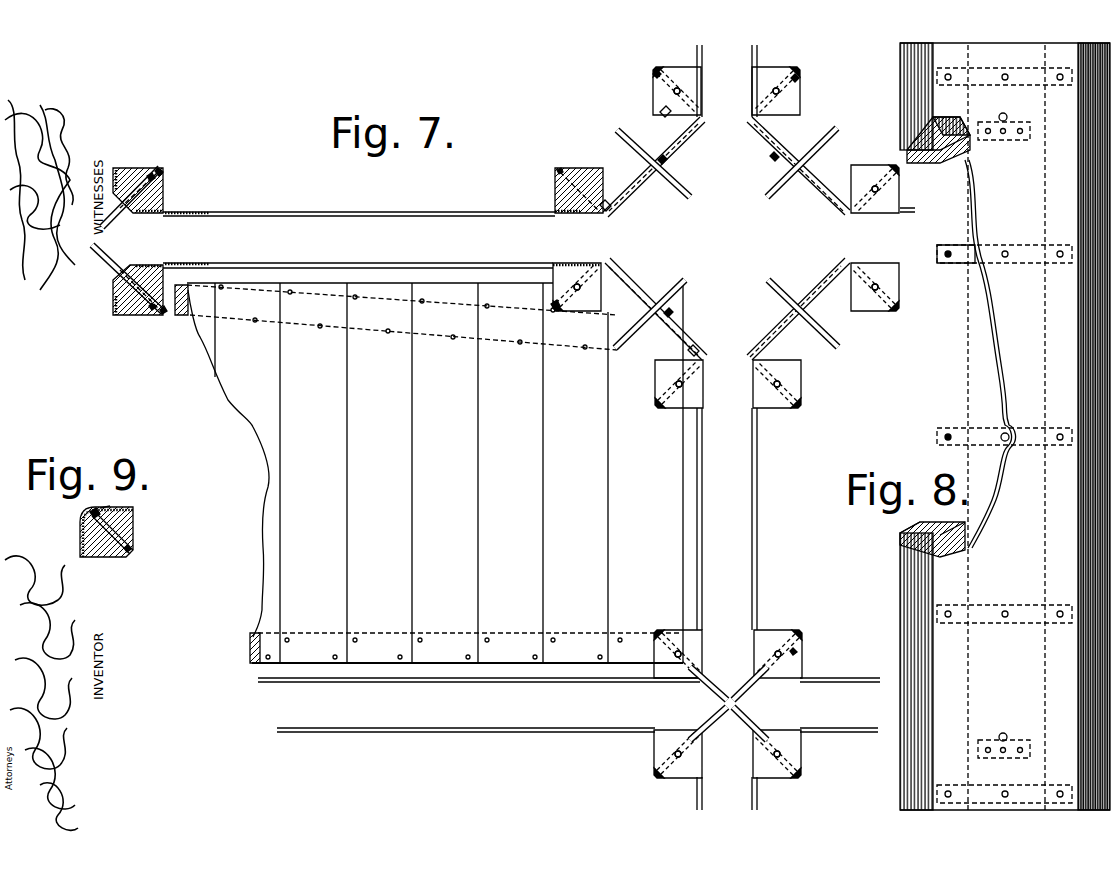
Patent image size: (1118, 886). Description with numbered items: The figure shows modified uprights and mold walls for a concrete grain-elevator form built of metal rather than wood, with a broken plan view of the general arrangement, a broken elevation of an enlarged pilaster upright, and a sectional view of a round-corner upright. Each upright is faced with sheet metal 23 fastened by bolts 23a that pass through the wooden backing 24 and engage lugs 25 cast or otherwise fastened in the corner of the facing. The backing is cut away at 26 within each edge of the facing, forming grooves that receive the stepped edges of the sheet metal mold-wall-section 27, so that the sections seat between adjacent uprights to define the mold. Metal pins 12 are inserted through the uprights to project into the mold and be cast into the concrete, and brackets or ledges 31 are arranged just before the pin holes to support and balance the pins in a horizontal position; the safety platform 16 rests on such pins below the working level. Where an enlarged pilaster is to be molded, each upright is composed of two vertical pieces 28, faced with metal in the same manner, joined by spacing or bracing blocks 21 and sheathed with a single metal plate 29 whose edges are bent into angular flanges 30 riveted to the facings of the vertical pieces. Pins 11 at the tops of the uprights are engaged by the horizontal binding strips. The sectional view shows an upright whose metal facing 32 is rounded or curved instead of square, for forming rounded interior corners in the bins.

In FIG. 7, the pin 11 is at (678, 88).
In FIG. 7, the metal pin 12 is at (110, 258).
In FIG. 8, the metal pin 12 is at (1006, 114).
In FIG. 7, the safety platform 16 is at (429, 473).
In FIG. 7, the spacing or bracing block 21 is at (632, 176).
In FIG. 8, the spacing or bracing block 21 is at (958, 262).
In FIG. 7, the sheet metal facing 23 is at (114, 170).
In FIG. 8, the sheet metal facing 23 is at (900, 94).
In FIG. 7, the bolt 23a is at (164, 184).
In FIG. 9, the bolt 23a is at (110, 558).
In FIG. 7, the wooden backing 24 is at (152, 176).
In FIG. 9, the wooden backing 24 is at (126, 542).
In FIG. 7, the lug 25 is at (140, 203).
In FIG. 9, the lug 25 is at (88, 520).
In FIG. 7, the cut-away groove 26 is at (140, 168).
In FIG. 8, the cut-away groove 26 is at (935, 152).
In FIG. 9, the cut-away groove 26 is at (133, 522).
In FIG. 7, the sheet metal mold-wall section 27 is at (352, 212).
In FIG. 7, the vertical piece 28 is at (583, 168).
In FIG. 8, the vertical piece 28 is at (958, 160).
In FIG. 7, the metal plate 29 is at (678, 137).
In FIG. 8, the metal plate 29 is at (978, 342).
In FIG. 7, the angular flange 30 is at (606, 206).
In FIG. 8, the angular flange 30 is at (935, 128).
In FIG. 7, the bracket or ledge 31 is at (664, 160).
In FIG. 8, the bracket or ledge 31 is at (1014, 140).
In FIG. 9, the rounded metal facing 32 is at (108, 508).